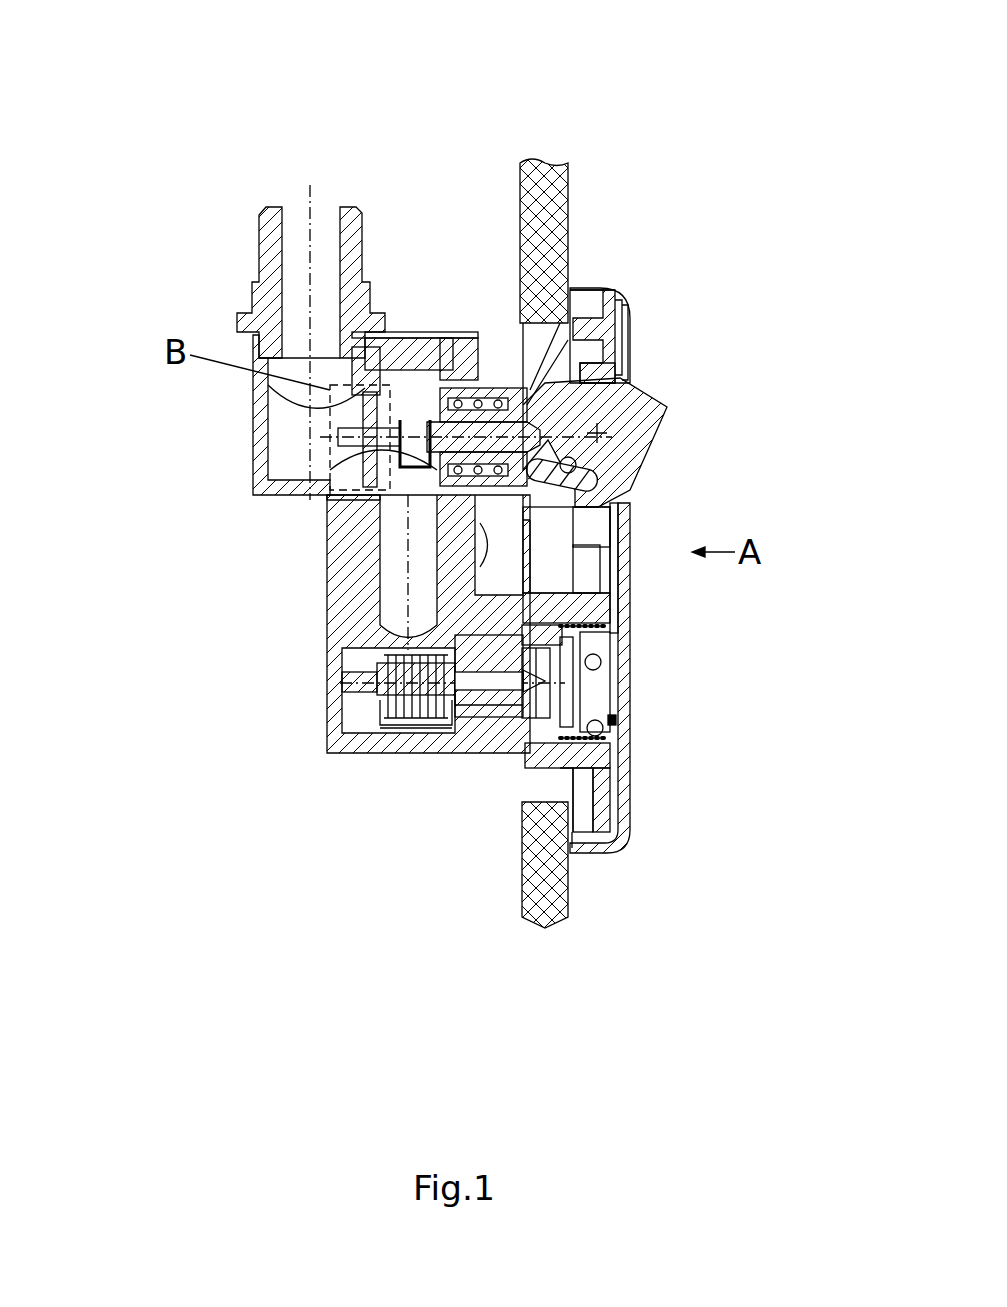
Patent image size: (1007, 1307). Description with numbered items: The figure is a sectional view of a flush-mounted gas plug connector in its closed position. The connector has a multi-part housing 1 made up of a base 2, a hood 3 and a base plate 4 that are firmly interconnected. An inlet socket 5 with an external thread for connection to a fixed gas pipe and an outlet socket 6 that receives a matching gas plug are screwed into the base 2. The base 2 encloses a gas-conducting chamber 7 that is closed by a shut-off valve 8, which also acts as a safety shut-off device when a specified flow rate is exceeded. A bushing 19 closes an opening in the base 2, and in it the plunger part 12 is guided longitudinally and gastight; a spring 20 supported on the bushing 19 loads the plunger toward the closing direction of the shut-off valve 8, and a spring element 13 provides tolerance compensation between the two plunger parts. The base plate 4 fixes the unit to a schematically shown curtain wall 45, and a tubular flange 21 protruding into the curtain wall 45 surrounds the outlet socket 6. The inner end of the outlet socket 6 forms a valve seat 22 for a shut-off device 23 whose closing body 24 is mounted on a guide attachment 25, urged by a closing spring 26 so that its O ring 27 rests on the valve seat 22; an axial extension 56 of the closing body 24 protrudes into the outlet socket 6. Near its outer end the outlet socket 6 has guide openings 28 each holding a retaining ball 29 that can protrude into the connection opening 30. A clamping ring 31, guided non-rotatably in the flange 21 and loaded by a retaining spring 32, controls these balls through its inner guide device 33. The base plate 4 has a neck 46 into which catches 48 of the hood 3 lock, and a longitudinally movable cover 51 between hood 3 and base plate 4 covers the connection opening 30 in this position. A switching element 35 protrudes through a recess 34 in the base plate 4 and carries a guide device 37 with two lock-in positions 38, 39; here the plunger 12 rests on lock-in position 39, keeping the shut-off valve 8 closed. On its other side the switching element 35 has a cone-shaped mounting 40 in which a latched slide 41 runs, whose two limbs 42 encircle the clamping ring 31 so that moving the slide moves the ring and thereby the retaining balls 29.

The housing 1 is at (228, 403).
The base 2 is at (259, 447).
The hood 3 is at (575, 307).
The base plate 4 is at (610, 313).
The inlet socket 5 is at (267, 263).
The outlet socket 6 is at (505, 719).
The gas-conducting chamber 7 is at (400, 550).
The shut-off valve 8 is at (347, 466).
The plunger part 12 is at (445, 437).
The spring element 13 is at (333, 493).
The bushing 19 is at (448, 392).
The spring 20 is at (487, 402).
The tubular flange 21 is at (622, 712).
The valve seat 22 is at (488, 708).
The shut-off device 23 is at (418, 728).
The closing body 24 is at (467, 700).
The guide attachment 25 is at (388, 690).
The closing spring 26 is at (410, 708).
The O ring 27 is at (490, 657).
The guide openings 28 is at (593, 662).
The retaining ball 29 is at (596, 729).
The connection opening 30 is at (597, 688).
The clamping ring 31 is at (610, 627).
The retaining spring 32 is at (622, 765).
The inner guide device 33 is at (612, 636).
The recess 34 is at (632, 345).
The switching element 35 is at (622, 403).
The guide device 37 is at (632, 367).
The lock-in position 38 is at (538, 395).
The lock-in position 39 is at (530, 405).
The cone-shaped mounting 40 is at (550, 477).
The latched slide 41 is at (593, 522).
The limbs 42 is at (605, 583).
The curtain wall 45 is at (547, 898).
The neck 46 is at (572, 842).
The catches 48 is at (590, 296).
The cover 51 is at (613, 720).
The axial extension 56 is at (535, 682).